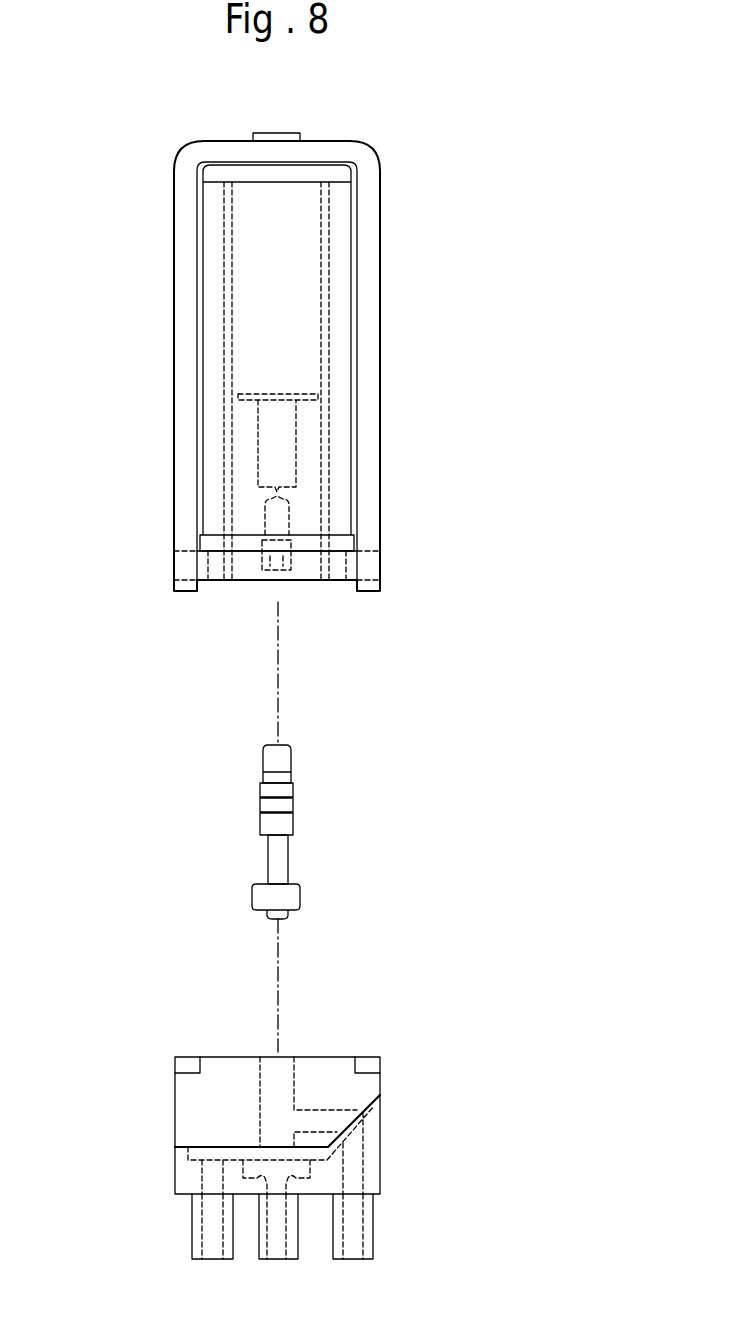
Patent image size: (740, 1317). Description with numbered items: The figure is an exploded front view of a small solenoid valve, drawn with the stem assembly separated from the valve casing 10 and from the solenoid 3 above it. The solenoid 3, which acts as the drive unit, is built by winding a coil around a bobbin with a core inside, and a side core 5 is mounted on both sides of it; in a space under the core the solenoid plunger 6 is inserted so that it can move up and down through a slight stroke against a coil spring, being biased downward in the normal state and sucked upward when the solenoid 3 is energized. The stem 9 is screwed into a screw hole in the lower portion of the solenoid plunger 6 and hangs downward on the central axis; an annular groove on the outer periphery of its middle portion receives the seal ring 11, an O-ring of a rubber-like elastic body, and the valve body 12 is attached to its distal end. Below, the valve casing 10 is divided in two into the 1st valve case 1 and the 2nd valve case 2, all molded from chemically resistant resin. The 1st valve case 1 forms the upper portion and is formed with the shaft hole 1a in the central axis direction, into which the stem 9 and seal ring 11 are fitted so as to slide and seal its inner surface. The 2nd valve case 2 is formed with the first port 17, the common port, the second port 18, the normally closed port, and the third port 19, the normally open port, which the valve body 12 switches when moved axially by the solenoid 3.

The 1st valve case 1 is at (178, 1115).
The shaft hole 1a is at (294, 1057).
The 2nd valve case 2 is at (178, 1178).
The solenoid 3 is at (308, 249).
The side core 5 is at (380, 383).
The solenoid plunger 6 is at (321, 479).
The stem 9 is at (283, 790).
The valve casing 10 is at (73, 1058).
The seal ring 11 is at (293, 803).
The valve body 12 is at (300, 895).
The first port 17 is at (213, 1240).
The second port 18 is at (280, 1240).
The third port 19 is at (357, 1243).